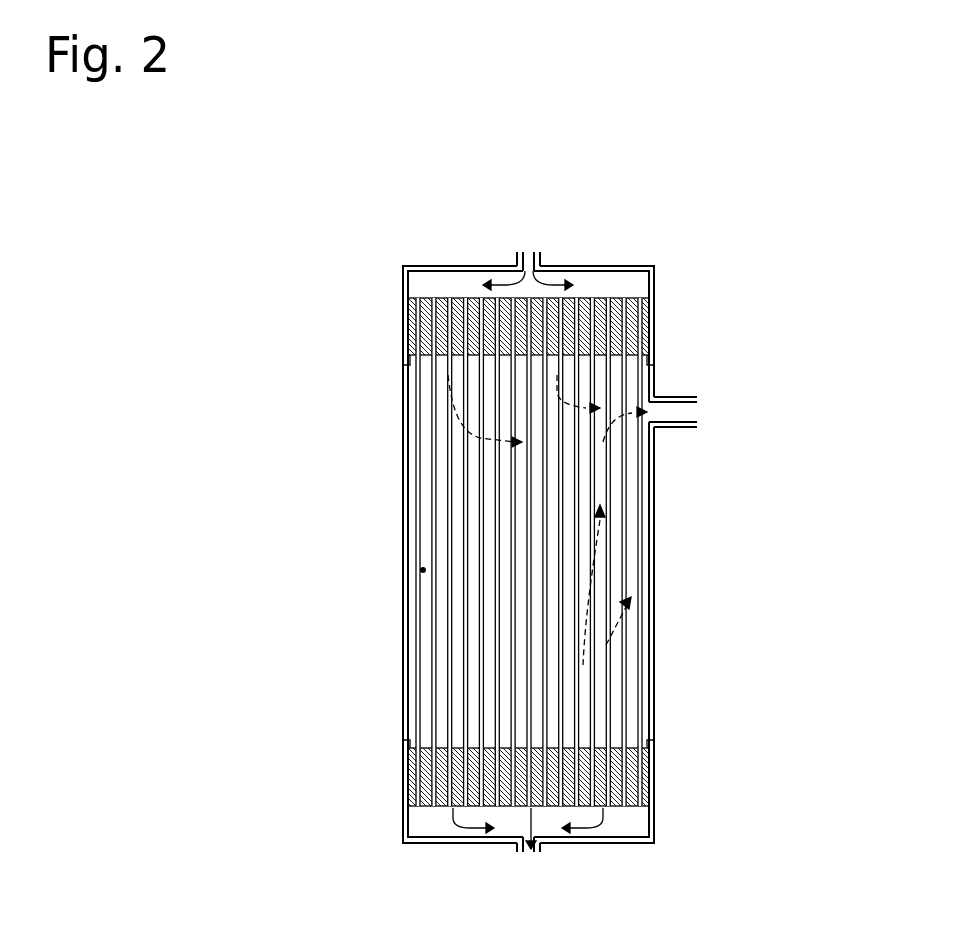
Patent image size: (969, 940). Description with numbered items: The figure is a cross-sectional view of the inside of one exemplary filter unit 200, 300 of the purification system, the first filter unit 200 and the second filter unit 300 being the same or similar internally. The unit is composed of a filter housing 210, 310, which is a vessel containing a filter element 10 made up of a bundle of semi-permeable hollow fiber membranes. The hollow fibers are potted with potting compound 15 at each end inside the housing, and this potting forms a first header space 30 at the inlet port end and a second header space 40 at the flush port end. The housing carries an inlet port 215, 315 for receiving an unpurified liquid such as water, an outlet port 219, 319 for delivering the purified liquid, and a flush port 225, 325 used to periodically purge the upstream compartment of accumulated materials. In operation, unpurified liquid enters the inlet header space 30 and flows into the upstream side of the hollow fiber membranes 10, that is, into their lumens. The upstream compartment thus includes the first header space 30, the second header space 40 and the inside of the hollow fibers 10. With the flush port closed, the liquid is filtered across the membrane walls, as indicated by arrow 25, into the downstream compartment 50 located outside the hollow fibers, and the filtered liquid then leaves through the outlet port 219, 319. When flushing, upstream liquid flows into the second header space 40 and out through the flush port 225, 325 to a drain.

The first filter unit 200 is at (477, 533).
The second filter unit 300 is at (265, 255).
The filter housing 210 is at (431, 554).
The filter housing 310 is at (407, 497).
The inlet port 215 is at (624, 225).
The inlet port 315 is at (545, 258).
The flush port 225 is at (432, 873).
The flush port 325 is at (518, 846).
The outlet port 219 is at (723, 368).
The outlet port 319 is at (678, 397).
The potting compound 15 is at (410, 323).
The filter element 10 is at (430, 430).
The first header space 30 is at (625, 284).
The second header space 40 is at (437, 823).
The downstream compartment 50 is at (407, 573).
The arrow 25 is at (625, 522).